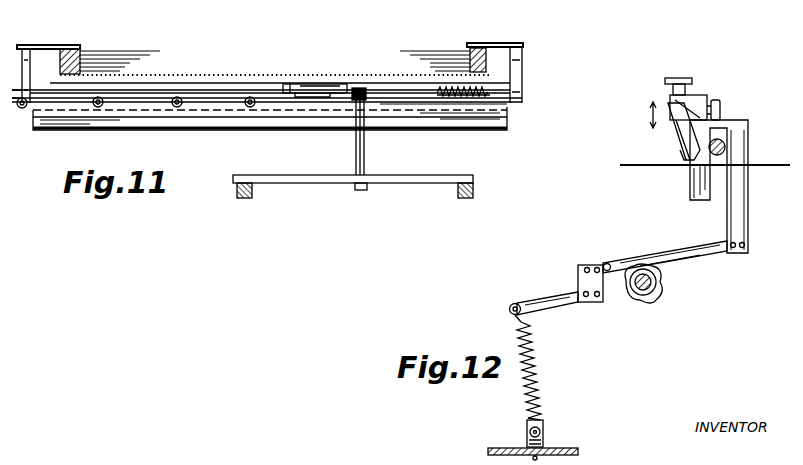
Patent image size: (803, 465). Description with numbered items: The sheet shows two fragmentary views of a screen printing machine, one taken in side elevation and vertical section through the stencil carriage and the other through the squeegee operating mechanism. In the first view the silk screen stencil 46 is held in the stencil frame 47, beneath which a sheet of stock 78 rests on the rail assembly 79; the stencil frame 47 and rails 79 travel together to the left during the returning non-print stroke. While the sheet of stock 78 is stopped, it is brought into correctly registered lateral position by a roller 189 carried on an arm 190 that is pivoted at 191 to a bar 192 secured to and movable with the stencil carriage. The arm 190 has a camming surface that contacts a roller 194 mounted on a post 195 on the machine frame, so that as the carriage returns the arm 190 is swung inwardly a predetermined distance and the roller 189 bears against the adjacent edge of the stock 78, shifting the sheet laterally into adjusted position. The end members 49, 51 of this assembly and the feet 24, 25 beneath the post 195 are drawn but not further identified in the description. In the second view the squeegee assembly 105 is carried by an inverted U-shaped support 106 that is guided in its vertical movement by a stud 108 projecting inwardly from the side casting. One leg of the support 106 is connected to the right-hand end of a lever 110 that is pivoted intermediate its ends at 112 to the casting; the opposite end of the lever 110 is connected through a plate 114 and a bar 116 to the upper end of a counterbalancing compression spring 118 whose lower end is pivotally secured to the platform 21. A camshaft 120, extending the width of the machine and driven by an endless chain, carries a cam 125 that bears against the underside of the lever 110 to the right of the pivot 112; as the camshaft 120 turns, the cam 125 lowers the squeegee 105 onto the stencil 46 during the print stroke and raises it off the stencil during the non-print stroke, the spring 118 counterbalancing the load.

In FIG. 11, the left end frame 49 is at (43, 48).
In FIG. 11, the right end frame 51 is at (491, 44).
In FIG. 11, the stencil 46 is at (222, 76).
In FIG. 11, the stencil frame 47 is at (272, 56).
In FIG. 11, the stock 78 is at (172, 82).
In FIG. 11, the rail assembly 79 is at (510, 115).
In FIG. 11, the roller 189 is at (300, 88).
In FIG. 11, the roller 194 is at (360, 88).
In FIG. 11, the post 195 is at (356, 151).
In FIG. 11, the arm 190 is at (412, 90).
In FIG. 11, the bar 192 is at (424, 104).
In FIG. 11, the pivot 191 is at (476, 104).
In FIG. 11, the left foot 24 is at (236, 190).
In FIG. 11, the right foot 25 is at (460, 190).
In FIG. 12, the squeegee assembly 105 is at (680, 136).
In FIG. 12, the stud 108 is at (722, 140).
In FIG. 12, the inverted U-shaped support 106 is at (748, 145).
In FIG. 12, the lever 110 is at (680, 260).
In FIG. 12, the pivotal connection 112 is at (610, 263).
In FIG. 12, the plate 114 is at (584, 282).
In FIG. 12, the bar 116 is at (558, 302).
In FIG. 12, the camshaft 120 is at (657, 282).
In FIG. 12, the cam 125 is at (640, 301).
In FIG. 12, the counterbalancing compression spring 118 is at (536, 382).
In FIG. 12, the platform 21 is at (560, 448).